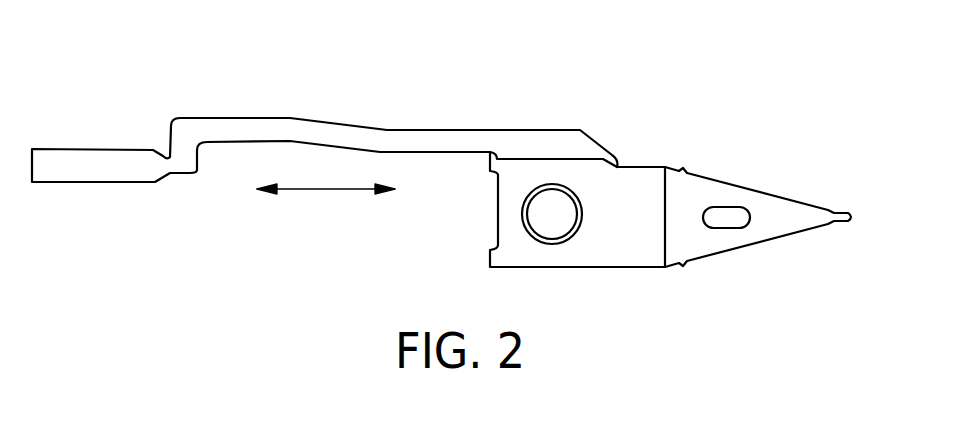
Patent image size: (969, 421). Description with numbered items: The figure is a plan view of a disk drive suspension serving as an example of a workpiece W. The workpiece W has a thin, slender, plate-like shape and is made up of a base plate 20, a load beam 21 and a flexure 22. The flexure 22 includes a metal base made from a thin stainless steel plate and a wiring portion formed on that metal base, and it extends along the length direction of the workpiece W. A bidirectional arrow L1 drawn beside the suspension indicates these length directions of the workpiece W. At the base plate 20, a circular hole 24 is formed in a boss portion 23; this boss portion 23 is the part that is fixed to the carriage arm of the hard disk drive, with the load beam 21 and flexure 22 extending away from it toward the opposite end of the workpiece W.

The workpiece W is at (586, 97).
The base plate 20 is at (640, 180).
The load beam 21 is at (710, 240).
The flexure 22 is at (429, 137).
The boss portion 23 is at (523, 209).
The circular hole 24 is at (560, 241).
The bidirectional arrow L1 is at (328, 191).